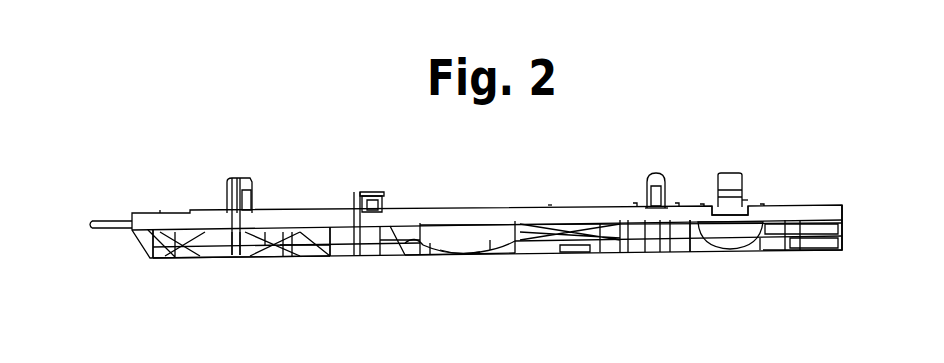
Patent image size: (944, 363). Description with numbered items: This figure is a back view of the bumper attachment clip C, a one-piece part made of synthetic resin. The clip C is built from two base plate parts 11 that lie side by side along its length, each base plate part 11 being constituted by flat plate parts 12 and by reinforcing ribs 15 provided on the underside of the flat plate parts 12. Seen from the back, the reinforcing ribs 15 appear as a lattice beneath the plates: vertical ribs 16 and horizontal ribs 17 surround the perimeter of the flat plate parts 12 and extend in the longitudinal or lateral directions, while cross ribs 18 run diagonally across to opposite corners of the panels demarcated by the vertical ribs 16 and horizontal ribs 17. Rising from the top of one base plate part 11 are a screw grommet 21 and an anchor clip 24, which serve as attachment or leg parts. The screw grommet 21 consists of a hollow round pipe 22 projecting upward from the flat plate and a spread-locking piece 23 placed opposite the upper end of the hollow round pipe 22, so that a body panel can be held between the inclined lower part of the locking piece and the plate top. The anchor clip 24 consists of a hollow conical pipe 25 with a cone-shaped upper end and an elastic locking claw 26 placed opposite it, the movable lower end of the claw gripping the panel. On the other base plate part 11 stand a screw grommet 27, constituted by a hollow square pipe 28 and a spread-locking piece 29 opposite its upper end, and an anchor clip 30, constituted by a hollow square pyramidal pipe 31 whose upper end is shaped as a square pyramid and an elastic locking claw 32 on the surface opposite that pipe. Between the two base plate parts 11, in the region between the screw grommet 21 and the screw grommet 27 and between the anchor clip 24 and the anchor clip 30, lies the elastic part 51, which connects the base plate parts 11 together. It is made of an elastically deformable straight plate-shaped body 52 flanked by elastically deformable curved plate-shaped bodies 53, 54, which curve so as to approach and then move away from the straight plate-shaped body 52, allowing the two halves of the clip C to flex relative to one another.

The base plate part 11 is at (128, 245).
The flat plate part 12 is at (757, 260).
The bumper attachment clip C is at (553, 206).
The reinforcing rib 15 is at (150, 305).
The vertical rib 16 is at (160, 260).
The horizontal rib 17 is at (245, 257).
The cross rib 18 is at (292, 257).
The screw grommet 21 is at (708, 139).
The hollow round pipe 22 is at (746, 200).
The spread-locking piece 23 is at (733, 179).
The anchor clip 24 is at (605, 139).
The hollow conical pipe 25 is at (650, 186).
The elastic locking claw 26 is at (662, 196).
The screw grommet 27 is at (427, 146).
The hollow square pipe 28 is at (382, 203).
The spread-locking piece 29 is at (357, 200).
The anchor clip 30 is at (290, 145).
The hollow square pyramidal pipe 31 is at (236, 186).
The elastic locking claw 32 is at (250, 200).
The elastic part 51 is at (518, 300).
The straight plate-shaped body 52 is at (460, 250).
The curved plate-shaped body 53 is at (432, 255).
The curved plate-shaped body 54 is at (490, 250).